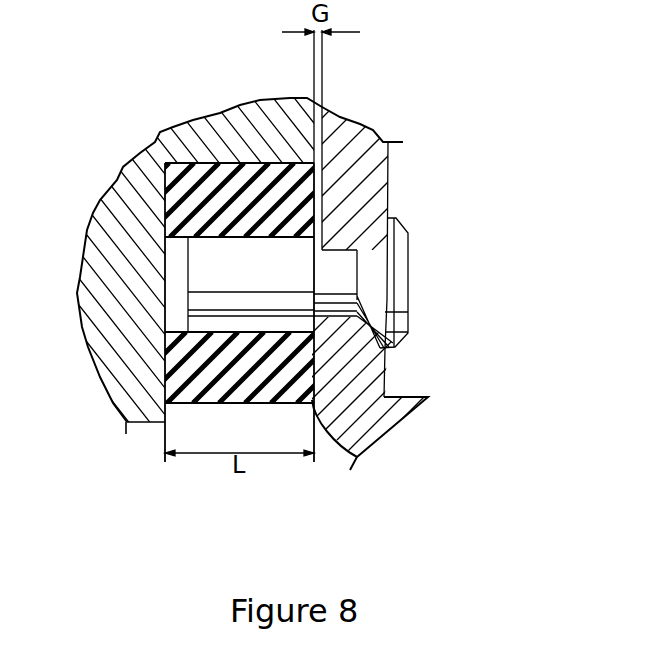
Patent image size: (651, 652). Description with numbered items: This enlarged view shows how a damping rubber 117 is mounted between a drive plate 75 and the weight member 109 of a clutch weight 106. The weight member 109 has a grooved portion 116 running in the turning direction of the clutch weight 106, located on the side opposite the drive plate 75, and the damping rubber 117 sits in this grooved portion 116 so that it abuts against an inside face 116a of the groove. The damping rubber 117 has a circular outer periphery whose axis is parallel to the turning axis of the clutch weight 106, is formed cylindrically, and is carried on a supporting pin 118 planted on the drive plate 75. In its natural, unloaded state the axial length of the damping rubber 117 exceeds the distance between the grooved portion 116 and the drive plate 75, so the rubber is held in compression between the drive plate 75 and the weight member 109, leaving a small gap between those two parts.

The drive plate 75 is at (390, 397).
The clutch weight 106 is at (144, 423).
The weight member 109 is at (110, 332).
The grooved portion 116 is at (142, 152).
The inside face 116a is at (295, 238).
The damping rubber 117 is at (296, 200).
The supporting pin 118 is at (403, 278).